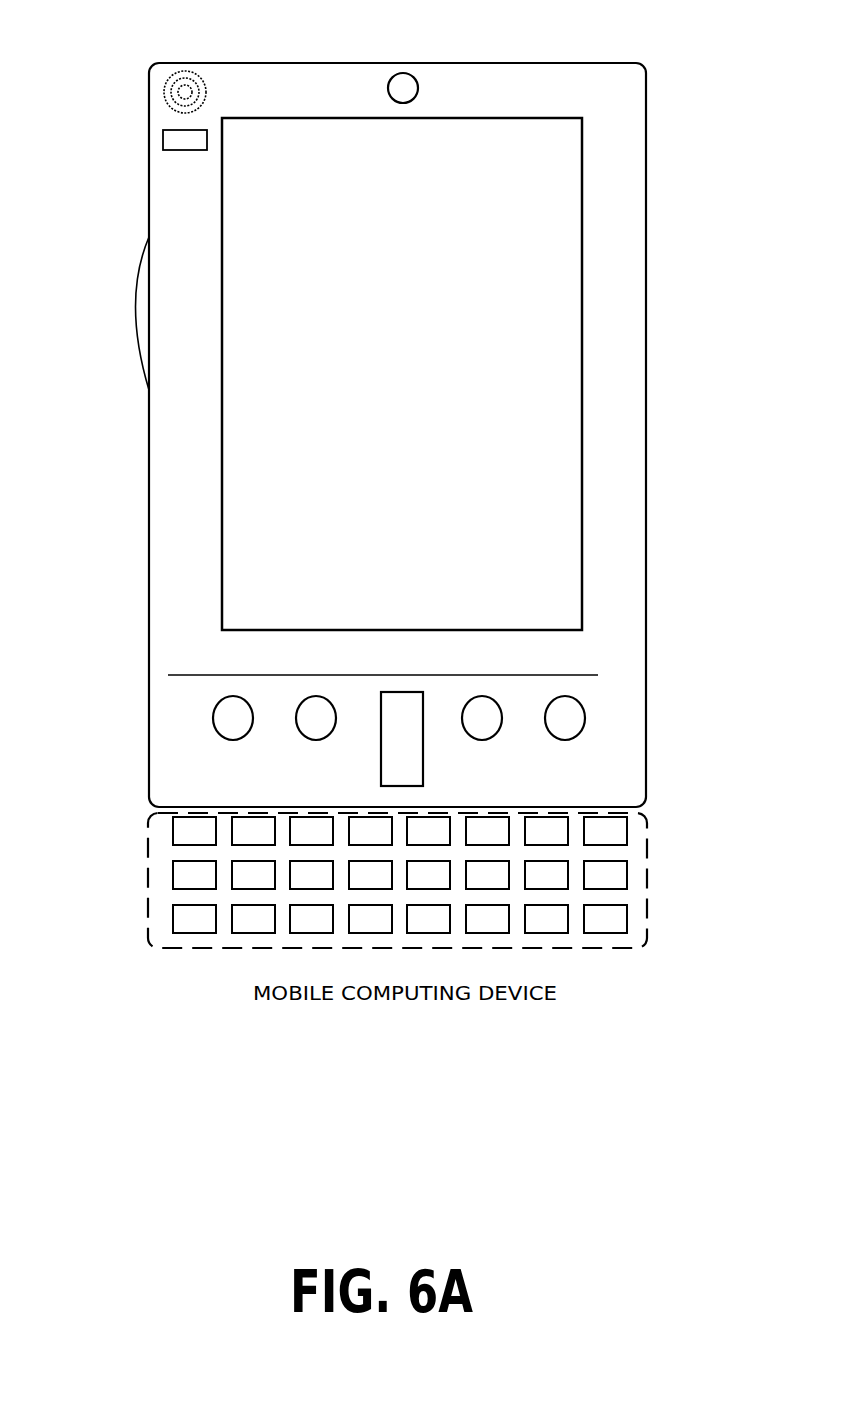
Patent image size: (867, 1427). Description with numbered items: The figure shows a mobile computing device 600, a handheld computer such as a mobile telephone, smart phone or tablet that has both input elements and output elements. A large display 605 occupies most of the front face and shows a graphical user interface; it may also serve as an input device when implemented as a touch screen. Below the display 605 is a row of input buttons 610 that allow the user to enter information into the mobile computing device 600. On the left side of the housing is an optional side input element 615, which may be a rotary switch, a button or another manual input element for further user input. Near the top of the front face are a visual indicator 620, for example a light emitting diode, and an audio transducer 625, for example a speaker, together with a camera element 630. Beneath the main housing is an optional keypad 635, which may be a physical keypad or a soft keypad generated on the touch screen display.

The mobile computing device 600 is at (646, 92).
The display 605 is at (252, 468).
The input buttons 610 is at (381, 747).
The side input element 615 is at (127, 298).
The visual indicator 620 is at (163, 136).
The audio transducer 625 is at (165, 85).
The camera 630 is at (393, 74).
The keypad 635 is at (160, 878).